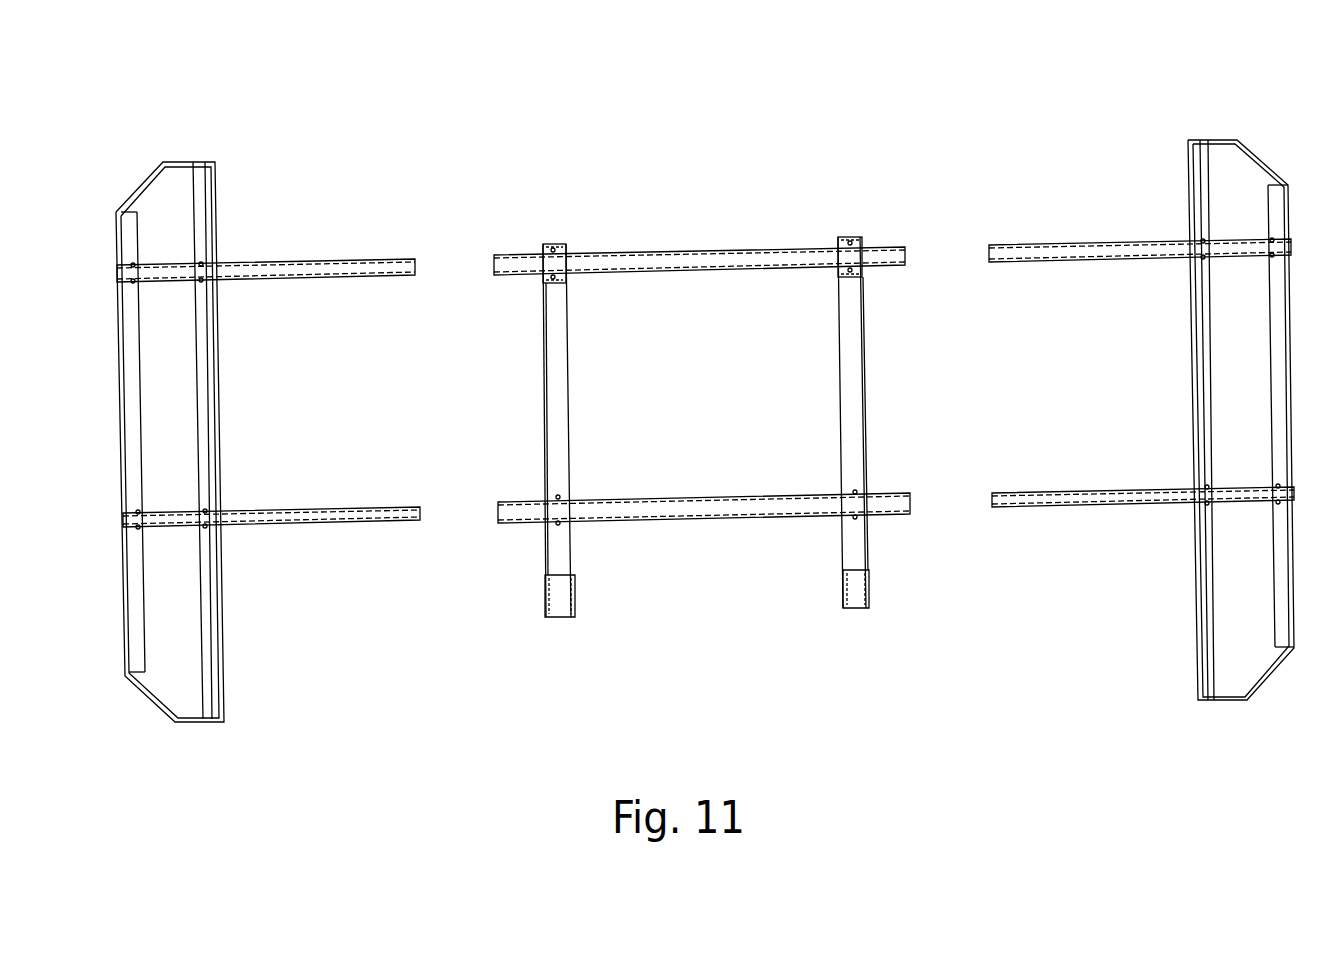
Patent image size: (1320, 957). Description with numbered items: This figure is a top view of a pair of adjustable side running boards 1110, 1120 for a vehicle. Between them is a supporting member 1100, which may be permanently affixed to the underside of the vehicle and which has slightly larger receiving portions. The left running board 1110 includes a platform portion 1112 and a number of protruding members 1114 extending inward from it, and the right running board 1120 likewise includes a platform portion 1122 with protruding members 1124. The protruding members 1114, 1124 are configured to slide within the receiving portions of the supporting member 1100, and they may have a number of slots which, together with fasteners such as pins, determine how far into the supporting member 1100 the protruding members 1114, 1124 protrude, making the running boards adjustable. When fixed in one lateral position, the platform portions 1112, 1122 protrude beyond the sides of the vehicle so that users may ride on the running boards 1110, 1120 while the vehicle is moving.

The supporting member 1100 is at (708, 257).
The adjustable side running board 1110 is at (318, 217).
The platform portion 1112 is at (152, 197).
The protruding member 1114 is at (332, 273).
The adjustable side running board 1120 is at (1057, 198).
The platform portion 1122 is at (1242, 173).
The protruding member 1124 is at (1100, 257).